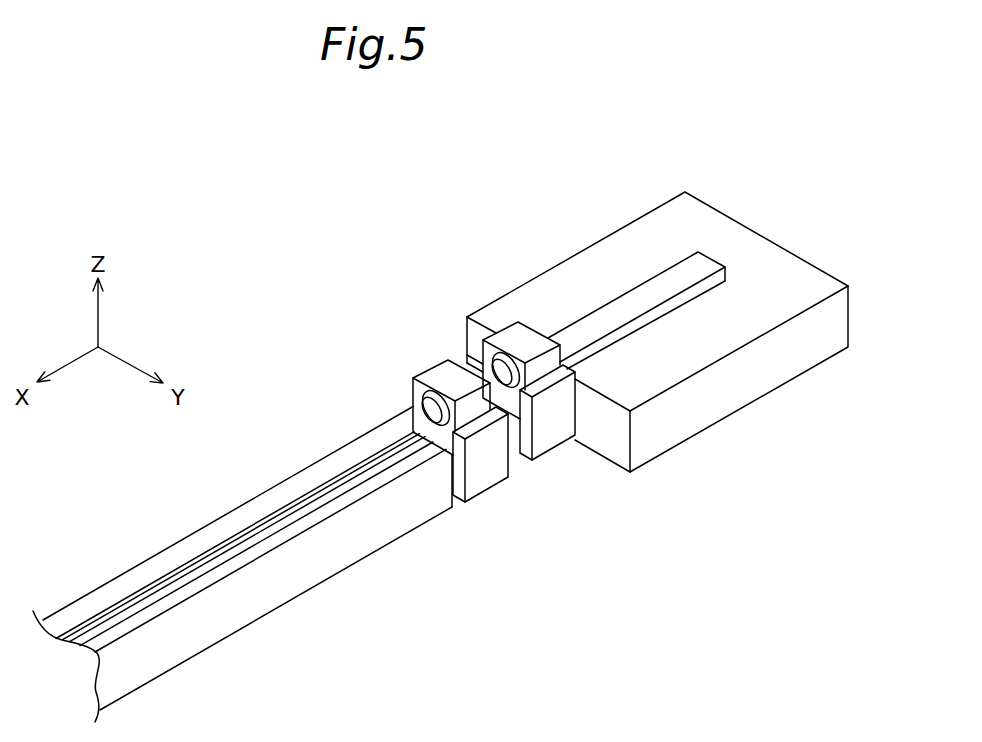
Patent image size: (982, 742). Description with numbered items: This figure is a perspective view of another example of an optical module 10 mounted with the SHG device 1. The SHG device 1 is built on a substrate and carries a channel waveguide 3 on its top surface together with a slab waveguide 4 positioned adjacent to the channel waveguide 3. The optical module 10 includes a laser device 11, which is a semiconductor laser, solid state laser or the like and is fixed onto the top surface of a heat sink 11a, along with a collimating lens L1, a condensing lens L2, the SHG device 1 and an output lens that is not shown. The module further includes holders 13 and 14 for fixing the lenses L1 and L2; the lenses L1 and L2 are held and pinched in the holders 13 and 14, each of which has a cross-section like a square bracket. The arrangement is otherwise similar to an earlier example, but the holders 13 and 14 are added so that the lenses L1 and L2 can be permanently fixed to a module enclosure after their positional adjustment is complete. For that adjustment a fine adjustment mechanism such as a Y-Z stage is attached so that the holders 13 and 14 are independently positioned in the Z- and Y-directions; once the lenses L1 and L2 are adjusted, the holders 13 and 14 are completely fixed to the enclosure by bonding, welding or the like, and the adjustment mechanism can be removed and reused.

The SHG device 1 is at (207, 533).
The channel waveguide 3 is at (278, 513).
The slab waveguide 4 is at (318, 508).
The optical module 10 is at (222, 240).
The laser device 11 is at (698, 267).
The heat sink 11a is at (808, 288).
The holder 13 is at (557, 438).
The holder 14 is at (483, 468).
The collimating lens L1 is at (470, 338).
The condensing lens L2 is at (411, 405).